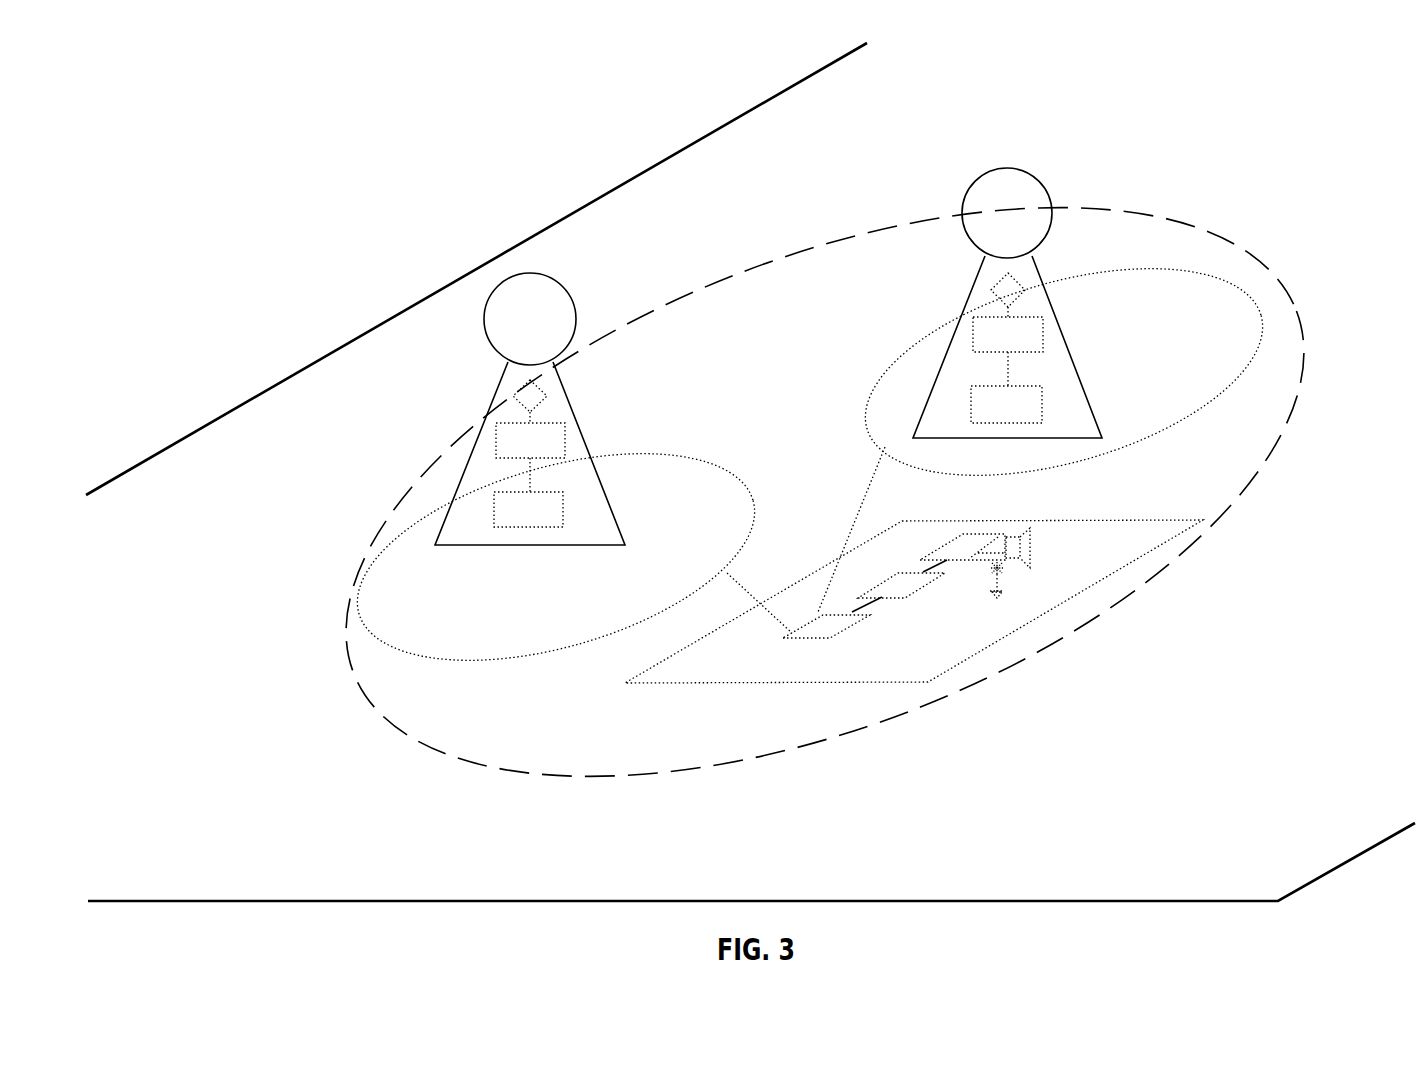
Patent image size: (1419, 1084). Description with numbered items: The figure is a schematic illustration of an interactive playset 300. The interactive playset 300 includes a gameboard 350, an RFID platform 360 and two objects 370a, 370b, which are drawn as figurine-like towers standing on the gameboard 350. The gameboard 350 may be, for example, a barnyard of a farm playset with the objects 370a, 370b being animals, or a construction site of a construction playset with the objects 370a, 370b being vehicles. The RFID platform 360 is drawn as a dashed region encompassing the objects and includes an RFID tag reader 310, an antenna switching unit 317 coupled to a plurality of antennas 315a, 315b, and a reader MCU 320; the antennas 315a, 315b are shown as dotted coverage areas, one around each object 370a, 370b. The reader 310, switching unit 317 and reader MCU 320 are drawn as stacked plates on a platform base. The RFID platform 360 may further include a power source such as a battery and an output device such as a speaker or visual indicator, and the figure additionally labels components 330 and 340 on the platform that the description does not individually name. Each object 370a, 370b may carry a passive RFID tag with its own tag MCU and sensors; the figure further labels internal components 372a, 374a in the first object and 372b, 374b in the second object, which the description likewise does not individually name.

The interactive playset 300 is at (304, 252).
The RFID tag reader 310 is at (933, 583).
The antenna 315a is at (747, 501).
The antenna 315b is at (870, 400).
The antenna switching unit 317 is at (840, 633).
The reader MCU 320 is at (963, 534).
The antenna 330 is at (1003, 572).
The speaker 340 is at (1032, 553).
The gameboard 350 is at (288, 774).
The RFID platform 360 is at (970, 687).
The object 370a is at (548, 401).
The object 370b is at (1022, 291).
The first tower controller 372a is at (510, 453).
The second tower controller 372b is at (988, 347).
The first tower module 374a is at (509, 521).
The second tower module 374b is at (987, 416).